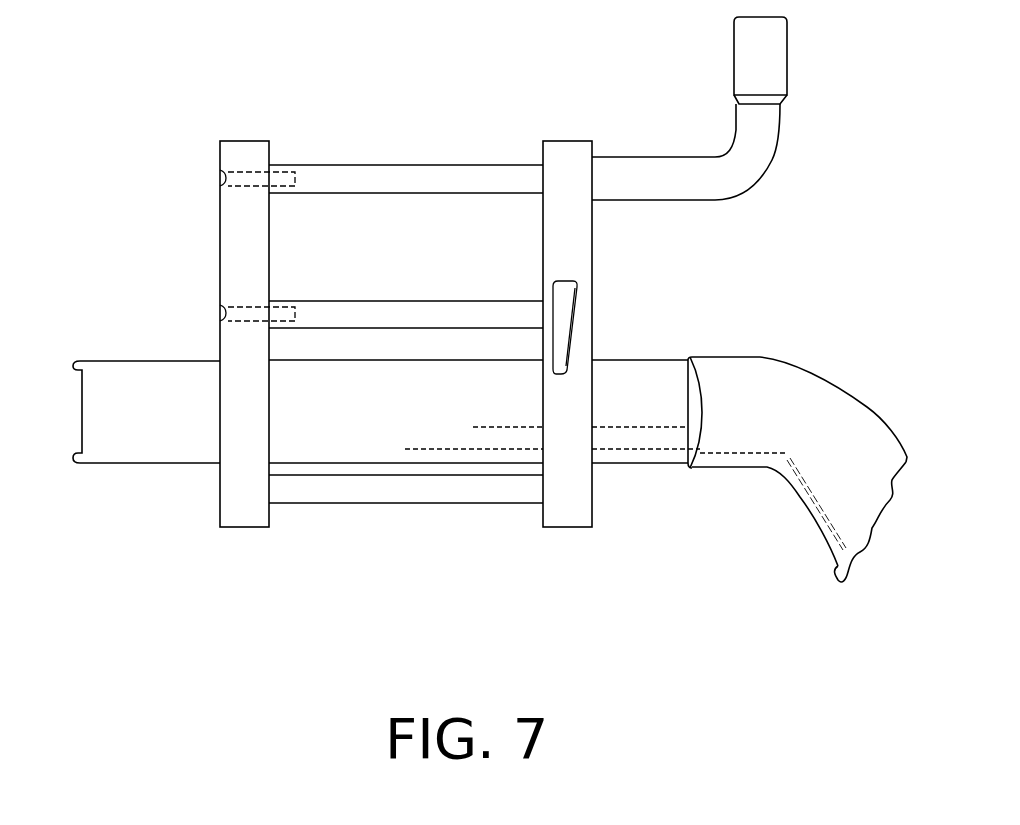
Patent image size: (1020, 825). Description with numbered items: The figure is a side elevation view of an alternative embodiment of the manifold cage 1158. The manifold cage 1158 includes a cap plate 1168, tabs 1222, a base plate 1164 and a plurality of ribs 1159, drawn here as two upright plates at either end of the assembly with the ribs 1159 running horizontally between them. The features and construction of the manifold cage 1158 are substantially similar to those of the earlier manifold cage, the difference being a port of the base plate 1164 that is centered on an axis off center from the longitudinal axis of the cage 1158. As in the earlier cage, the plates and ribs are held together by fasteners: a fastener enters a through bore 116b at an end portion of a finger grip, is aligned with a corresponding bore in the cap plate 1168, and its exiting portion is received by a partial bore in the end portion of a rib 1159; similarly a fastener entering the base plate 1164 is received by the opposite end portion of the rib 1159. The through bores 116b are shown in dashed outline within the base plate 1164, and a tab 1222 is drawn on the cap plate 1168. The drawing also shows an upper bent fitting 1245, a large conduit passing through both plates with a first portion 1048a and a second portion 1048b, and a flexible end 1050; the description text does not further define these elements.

The manifold cage 1158 is at (162, 127).
The through bore 116b is at (224, 180).
The rib 1159 is at (338, 180).
The tab 1222 is at (567, 310).
The fitting 1245 is at (762, 143).
The first conduit portion 1048a is at (137, 457).
The second conduit portion 1048b is at (660, 455).
The flexible end 1050 is at (843, 572).
The base plate 1164 is at (242, 515).
The cap plate 1168 is at (574, 510).